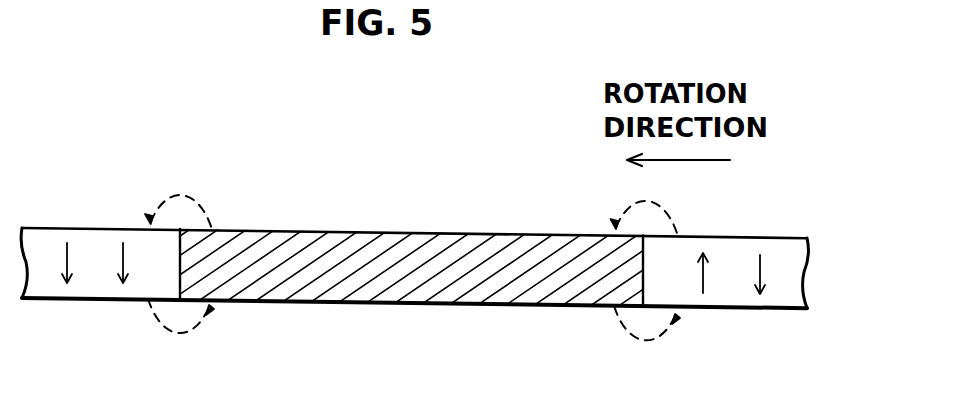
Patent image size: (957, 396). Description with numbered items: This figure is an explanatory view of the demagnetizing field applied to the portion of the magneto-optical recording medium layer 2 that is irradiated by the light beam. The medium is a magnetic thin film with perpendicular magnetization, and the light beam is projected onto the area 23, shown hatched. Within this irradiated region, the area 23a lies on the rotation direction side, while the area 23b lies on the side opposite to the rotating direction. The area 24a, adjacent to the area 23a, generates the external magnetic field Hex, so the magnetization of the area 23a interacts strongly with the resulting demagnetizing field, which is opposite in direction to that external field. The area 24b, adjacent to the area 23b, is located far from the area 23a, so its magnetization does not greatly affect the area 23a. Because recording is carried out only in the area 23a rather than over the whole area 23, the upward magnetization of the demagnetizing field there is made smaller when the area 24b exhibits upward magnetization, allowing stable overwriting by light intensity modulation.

The magneto-optical recording medium layer 2 is at (752, 250).
The area whereon the light beam is projected 23 is at (410, 273).
The area on the rotation direction side 23a is at (207, 265).
The area on the side opposite the rotation direction 23b is at (615, 272).
The area adjacent to area 23a 24a is at (148, 283).
The area adjacent to area 23b 24b is at (672, 287).